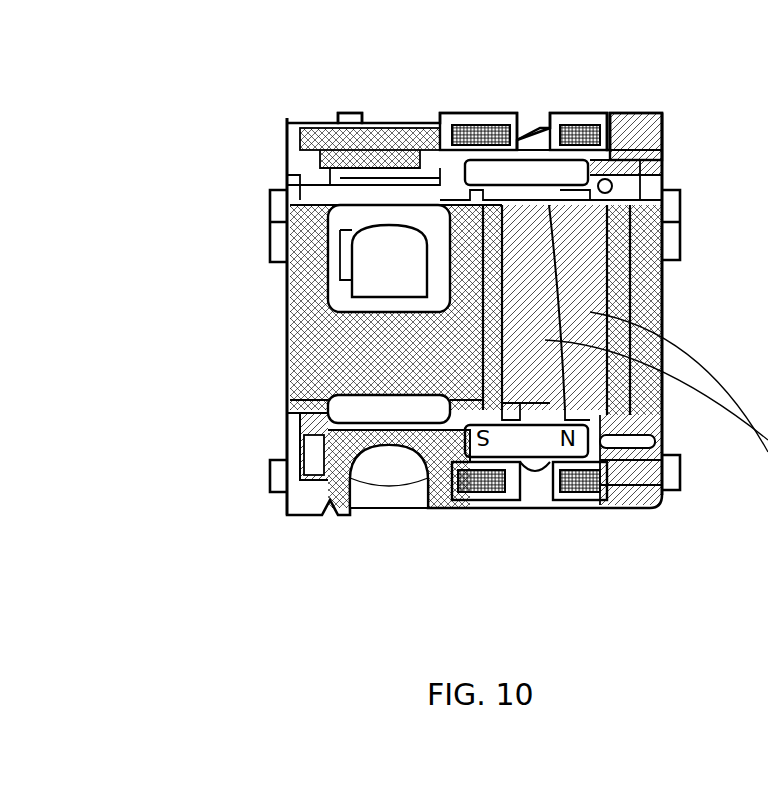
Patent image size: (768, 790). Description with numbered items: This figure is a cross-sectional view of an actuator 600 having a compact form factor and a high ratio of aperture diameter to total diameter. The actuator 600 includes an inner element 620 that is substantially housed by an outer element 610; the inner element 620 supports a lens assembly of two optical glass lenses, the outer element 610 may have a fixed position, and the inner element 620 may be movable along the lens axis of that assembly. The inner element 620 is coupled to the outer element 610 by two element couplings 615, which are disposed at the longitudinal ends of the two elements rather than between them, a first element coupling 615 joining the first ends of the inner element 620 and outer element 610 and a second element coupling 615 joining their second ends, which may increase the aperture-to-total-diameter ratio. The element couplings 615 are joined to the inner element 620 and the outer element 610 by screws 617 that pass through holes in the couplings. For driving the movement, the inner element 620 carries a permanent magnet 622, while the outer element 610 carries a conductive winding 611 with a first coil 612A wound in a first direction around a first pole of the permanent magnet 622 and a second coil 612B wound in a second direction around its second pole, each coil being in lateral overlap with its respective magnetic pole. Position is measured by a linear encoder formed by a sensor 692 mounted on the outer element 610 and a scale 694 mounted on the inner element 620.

The actuator 600 is at (565, 102).
The outer element 610 is at (635, 130).
The conductive winding 611 is at (435, 495).
The first coil 612A is at (448, 505).
The second coil 612B is at (592, 505).
The element coupling 615 is at (665, 312).
The screw 617 is at (683, 246).
The inner element 620 is at (640, 172).
The permanent magnet 622 is at (505, 110).
The sensor 692 is at (340, 113).
The scale 694 is at (287, 285).